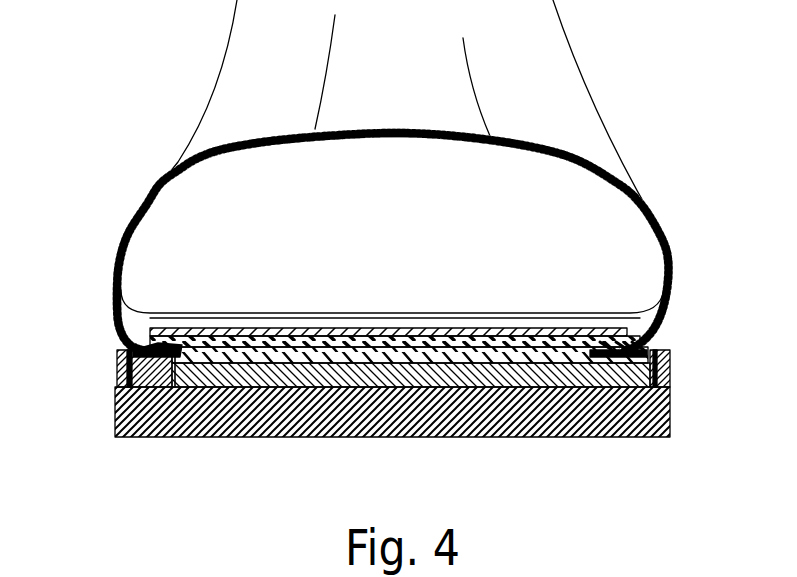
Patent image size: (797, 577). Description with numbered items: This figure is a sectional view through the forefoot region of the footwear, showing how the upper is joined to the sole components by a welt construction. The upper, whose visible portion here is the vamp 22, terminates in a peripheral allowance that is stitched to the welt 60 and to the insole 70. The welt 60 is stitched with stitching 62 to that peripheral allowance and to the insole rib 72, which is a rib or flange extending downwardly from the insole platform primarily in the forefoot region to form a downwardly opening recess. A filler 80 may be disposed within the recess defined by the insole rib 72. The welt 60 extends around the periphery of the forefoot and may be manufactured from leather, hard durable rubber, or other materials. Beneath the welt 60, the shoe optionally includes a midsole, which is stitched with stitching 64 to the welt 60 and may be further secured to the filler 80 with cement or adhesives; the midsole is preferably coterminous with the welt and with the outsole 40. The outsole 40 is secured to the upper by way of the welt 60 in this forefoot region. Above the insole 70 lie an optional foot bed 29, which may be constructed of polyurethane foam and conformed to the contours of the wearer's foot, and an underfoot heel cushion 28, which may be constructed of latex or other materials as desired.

The vamp 22 is at (118, 258).
The underfoot heel cushion 28 is at (412, 333).
The foot bed 29 is at (570, 318).
The outsole 40 is at (672, 403).
The welt 60 is at (118, 348).
The stitching 62 is at (150, 350).
The stitching 64 is at (117, 377).
The insole 70 is at (230, 343).
The insole rib 72 is at (175, 387).
The filler 80 is at (348, 353).